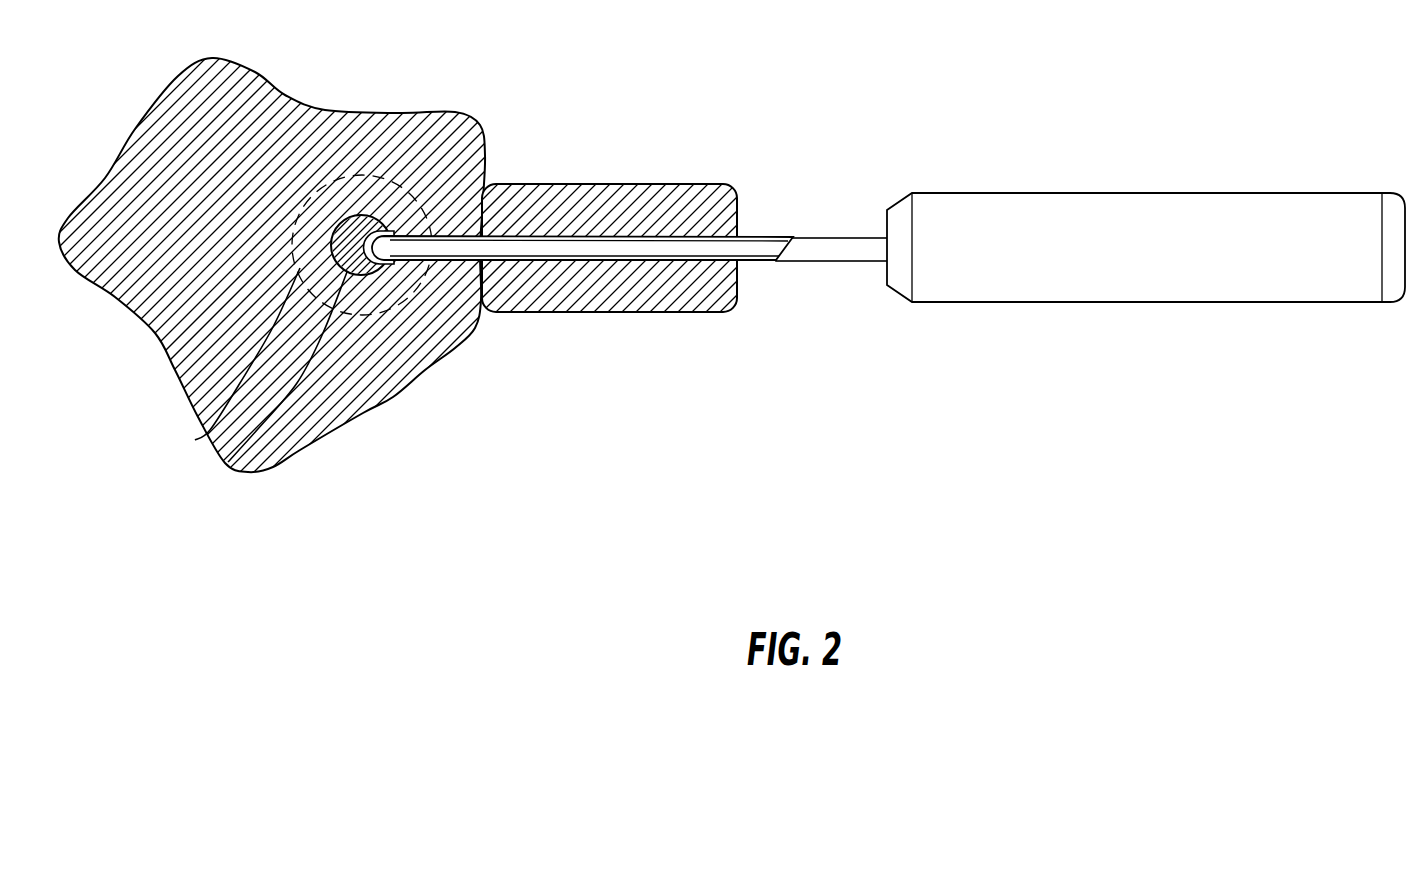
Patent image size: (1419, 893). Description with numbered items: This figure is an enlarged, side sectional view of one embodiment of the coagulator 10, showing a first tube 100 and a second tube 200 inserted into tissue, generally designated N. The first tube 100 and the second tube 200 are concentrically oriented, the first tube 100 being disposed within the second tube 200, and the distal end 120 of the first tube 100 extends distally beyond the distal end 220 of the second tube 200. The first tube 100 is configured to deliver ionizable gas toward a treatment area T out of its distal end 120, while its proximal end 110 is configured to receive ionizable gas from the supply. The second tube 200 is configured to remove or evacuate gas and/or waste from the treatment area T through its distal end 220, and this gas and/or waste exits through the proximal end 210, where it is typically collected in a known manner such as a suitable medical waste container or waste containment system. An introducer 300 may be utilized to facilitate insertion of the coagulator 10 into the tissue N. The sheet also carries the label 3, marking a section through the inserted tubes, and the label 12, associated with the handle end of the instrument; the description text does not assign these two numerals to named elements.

The treatment area T is at (186, 375).
The tissue N is at (355, 216).
The section line for FIG. 3 is at (413, 305).
The coagulator 10 is at (640, 363).
The insertion instrument 12 is at (993, 112).
The first tube 100 is at (518, 245).
The proximal end of first tube 110 is at (877, 233).
The distal end of first tube 120 is at (208, 433).
The second tube 200 is at (482, 262).
The proximal end of second tube 210 is at (810, 263).
The distal end of second tube 220 is at (345, 275).
The introducer 300 is at (657, 300).